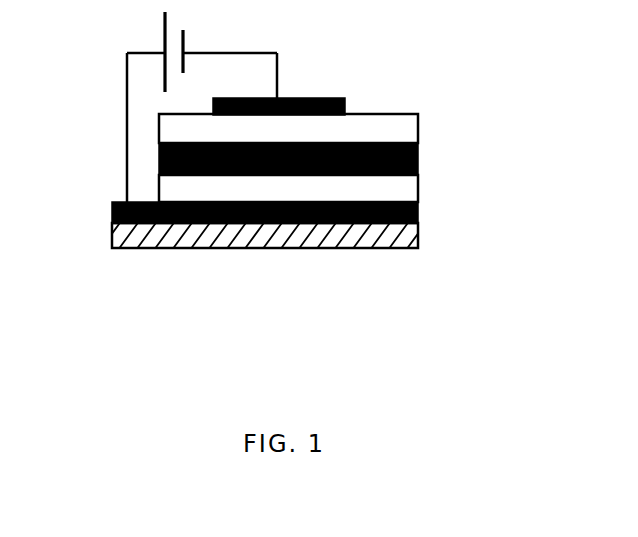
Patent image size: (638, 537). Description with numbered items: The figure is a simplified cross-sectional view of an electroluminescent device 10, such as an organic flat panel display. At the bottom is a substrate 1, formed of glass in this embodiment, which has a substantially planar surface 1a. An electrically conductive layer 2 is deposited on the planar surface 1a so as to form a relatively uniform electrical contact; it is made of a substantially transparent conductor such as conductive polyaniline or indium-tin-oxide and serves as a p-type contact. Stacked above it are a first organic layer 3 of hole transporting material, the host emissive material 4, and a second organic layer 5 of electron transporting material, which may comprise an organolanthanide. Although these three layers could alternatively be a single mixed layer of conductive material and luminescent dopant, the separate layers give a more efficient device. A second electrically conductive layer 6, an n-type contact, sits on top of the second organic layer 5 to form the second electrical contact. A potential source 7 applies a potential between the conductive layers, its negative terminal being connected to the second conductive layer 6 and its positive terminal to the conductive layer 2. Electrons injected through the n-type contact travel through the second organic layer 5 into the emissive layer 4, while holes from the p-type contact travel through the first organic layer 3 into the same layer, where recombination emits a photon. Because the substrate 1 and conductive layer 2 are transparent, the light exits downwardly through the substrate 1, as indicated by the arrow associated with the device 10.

The substrate 1 is at (428, 243).
The planar surface 1a is at (115, 213).
The electrically conductive layer 2 is at (425, 217).
The first organic layer 3 is at (424, 182).
The host emissive material 4 is at (430, 157).
The second organic layer 5 is at (428, 120).
The second electrically conductive layer 6 is at (363, 100).
The potential source 7 is at (187, 23).
The device 10 is at (280, 280).